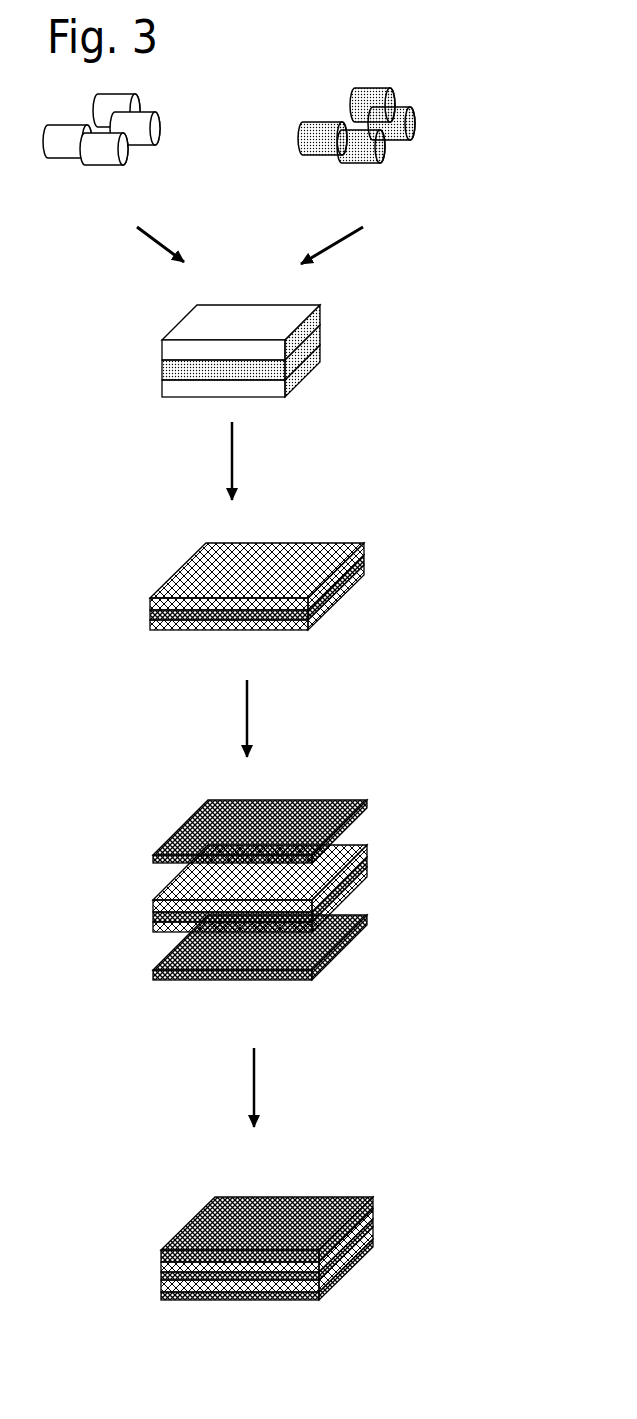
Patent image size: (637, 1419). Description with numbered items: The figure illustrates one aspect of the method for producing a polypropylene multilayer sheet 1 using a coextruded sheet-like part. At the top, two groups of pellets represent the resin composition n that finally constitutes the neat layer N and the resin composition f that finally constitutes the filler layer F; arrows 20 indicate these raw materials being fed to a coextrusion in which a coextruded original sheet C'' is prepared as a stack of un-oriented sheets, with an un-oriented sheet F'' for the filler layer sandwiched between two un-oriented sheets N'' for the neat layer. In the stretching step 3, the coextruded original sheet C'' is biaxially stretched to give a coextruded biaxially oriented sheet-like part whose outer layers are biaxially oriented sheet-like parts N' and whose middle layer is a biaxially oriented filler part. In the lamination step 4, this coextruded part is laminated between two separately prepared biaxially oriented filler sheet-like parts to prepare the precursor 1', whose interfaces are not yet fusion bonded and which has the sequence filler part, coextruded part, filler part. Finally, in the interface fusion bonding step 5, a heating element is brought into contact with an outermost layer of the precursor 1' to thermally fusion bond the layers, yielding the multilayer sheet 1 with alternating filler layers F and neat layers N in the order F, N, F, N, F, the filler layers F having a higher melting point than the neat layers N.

The resin composition for neat layer n is at (95, 163).
The resin composition for filler layer f is at (355, 157).
The feeding step 20 is at (146, 247).
The un-oriented sheet for neat layer N'' is at (260, 333).
The un-oriented sheet for filler layer F'' is at (271, 352).
The coextruded original sheet C'' is at (319, 333).
The stretching step 3 is at (240, 468).
The biaxially oriented sheet-like part for neat layer N' is at (234, 605).
The lamination step 4 is at (255, 723).
The precursor 1' is at (321, 868).
The interface fusion bonding step 5 is at (262, 1090).
The filler layer F is at (238, 1240).
The neat layer N is at (218, 1250).
The multilayer sheet 1 is at (280, 1241).